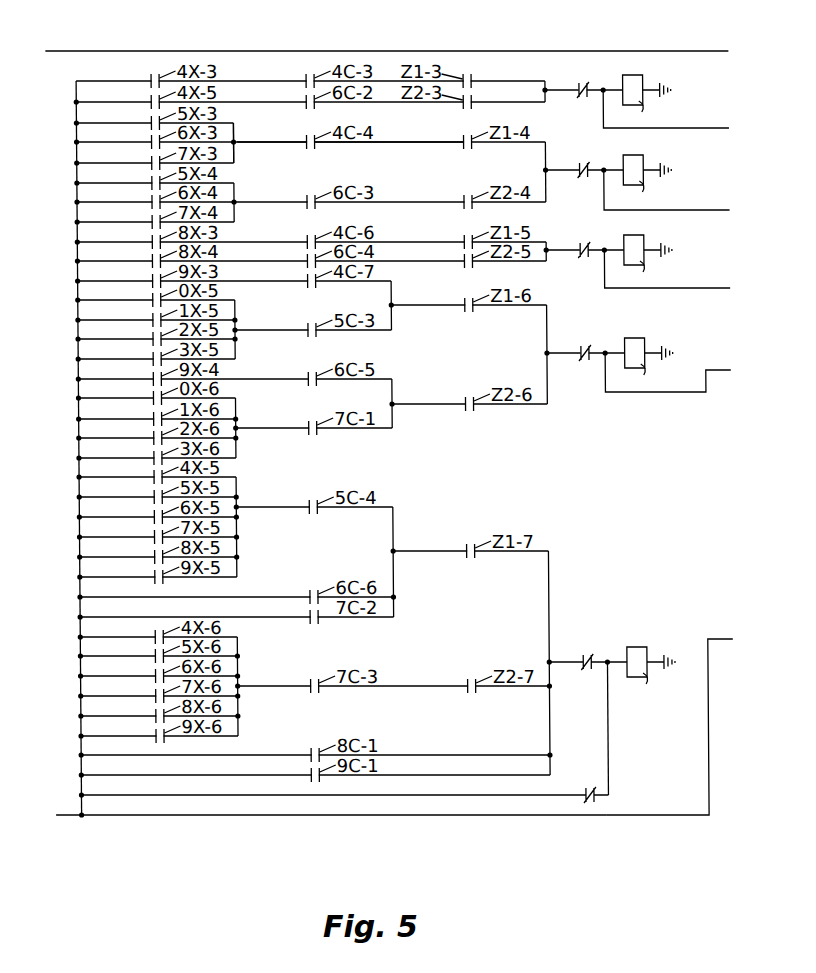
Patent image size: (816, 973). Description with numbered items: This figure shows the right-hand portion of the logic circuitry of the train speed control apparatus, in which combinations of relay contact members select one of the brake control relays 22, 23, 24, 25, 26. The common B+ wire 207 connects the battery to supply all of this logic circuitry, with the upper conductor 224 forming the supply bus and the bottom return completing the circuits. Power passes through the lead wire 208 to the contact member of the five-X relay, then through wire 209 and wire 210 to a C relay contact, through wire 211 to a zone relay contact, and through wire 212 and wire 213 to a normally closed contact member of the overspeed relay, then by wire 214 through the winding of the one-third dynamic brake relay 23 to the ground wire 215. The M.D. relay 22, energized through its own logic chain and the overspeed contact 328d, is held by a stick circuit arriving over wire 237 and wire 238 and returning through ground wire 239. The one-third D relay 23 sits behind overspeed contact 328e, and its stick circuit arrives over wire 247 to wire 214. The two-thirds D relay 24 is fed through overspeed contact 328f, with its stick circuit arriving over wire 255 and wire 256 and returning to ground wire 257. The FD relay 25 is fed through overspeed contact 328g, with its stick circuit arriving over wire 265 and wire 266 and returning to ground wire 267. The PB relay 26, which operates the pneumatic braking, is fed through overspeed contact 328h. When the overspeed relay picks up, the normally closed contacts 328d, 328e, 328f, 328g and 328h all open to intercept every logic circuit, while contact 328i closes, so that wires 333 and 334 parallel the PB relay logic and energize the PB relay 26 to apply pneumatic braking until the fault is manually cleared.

The supply conductor 224 is at (95, 51).
The common B+ wire 207 is at (701, 648).
The lead wire 208 is at (89, 127).
The wire 209 is at (235, 128).
The wire 210 is at (287, 141).
The wire 211 is at (444, 141).
The wire 212 is at (543, 150).
The wire 213 is at (543, 170).
The wire 214 is at (602, 168).
The ground wire 215 is at (661, 168).
The wire 237 is at (601, 108).
The wire 238 is at (602, 88).
The ground wire 239 is at (661, 88).
The wire 247 is at (679, 210).
The wire 255 is at (679, 288).
The wire 256 is at (602, 248).
The ground wire 257 is at (661, 248).
The wire 265 is at (688, 392).
The wire 266 is at (602, 351).
The ground wire 267 is at (661, 351).
The wire 333 is at (446, 795).
The wire 334 is at (610, 744).
The normally closed contact member of overspeed relay 328d is at (578, 86).
The normally closed contact member of overspeed relay 328e is at (586, 178).
The normally closed contact member of overspeed relay 328f is at (586, 258).
The normally closed contact member of overspeed relay 328g is at (586, 361).
The normally closed contact member of overspeed relay 328h is at (578, 660).
The contact member of overspeed relay 328i is at (580, 792).
The M.D. relay 22 is at (646, 112).
The one-third D relay 23 is at (646, 192).
The two-thirds D relay 24 is at (646, 272).
The FD relay 25 is at (646, 375).
The PB relay 26 is at (648, 683).